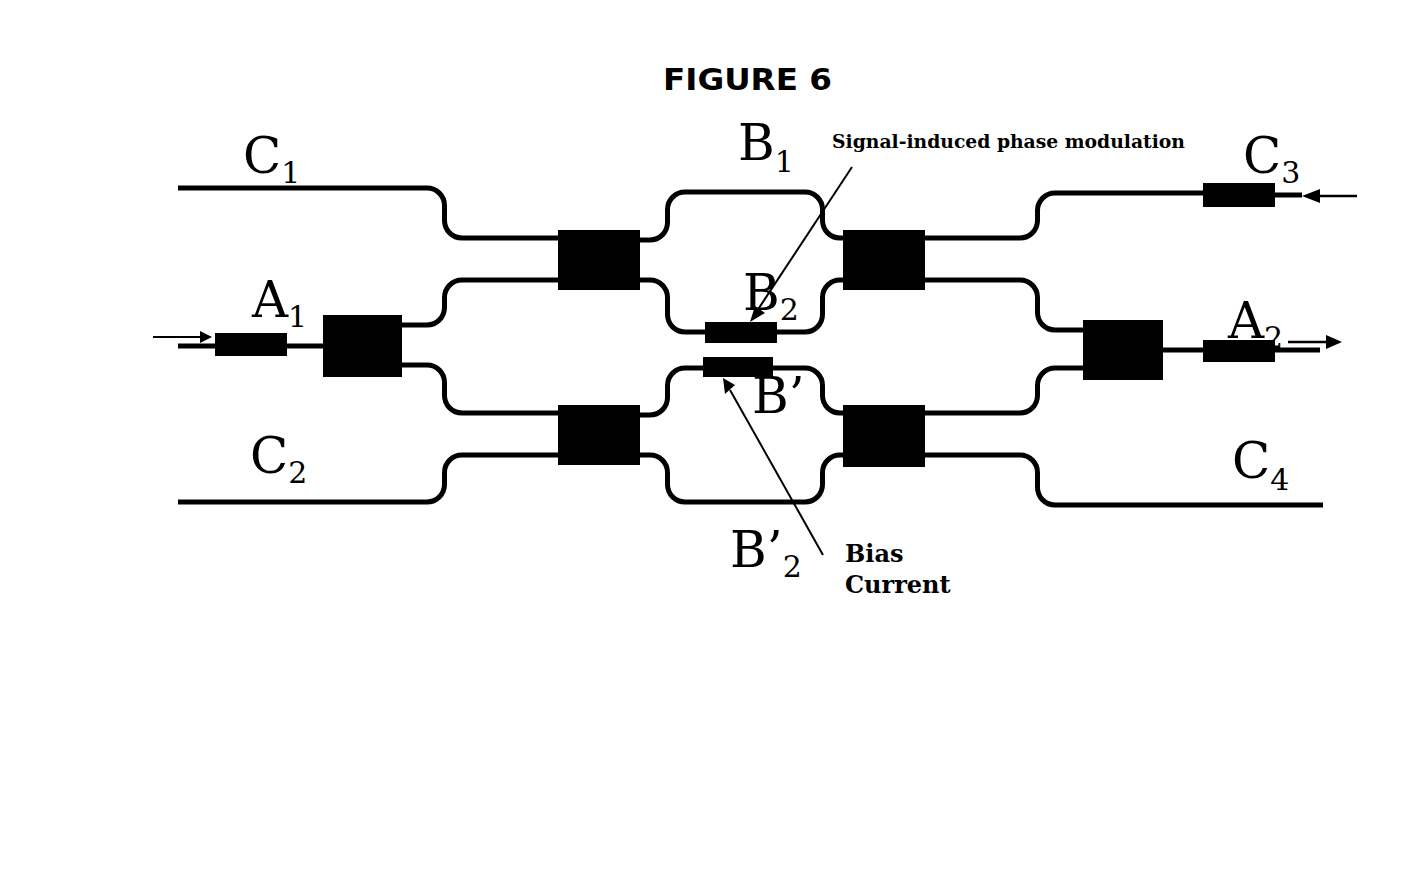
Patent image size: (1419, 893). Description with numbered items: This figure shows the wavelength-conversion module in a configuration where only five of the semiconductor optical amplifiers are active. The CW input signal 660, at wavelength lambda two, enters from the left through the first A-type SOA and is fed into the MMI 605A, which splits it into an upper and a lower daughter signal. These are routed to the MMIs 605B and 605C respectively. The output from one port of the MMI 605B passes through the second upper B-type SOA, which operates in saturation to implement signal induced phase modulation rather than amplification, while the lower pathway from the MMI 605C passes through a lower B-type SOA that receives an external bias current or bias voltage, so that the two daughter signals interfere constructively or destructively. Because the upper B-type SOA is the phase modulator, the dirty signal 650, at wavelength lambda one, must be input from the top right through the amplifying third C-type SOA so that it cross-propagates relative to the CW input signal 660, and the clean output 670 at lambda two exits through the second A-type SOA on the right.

The MMI 605A is at (380, 293).
The MMI 605B is at (592, 232).
The MMI 605C is at (577, 405).
The dirty signal 650 is at (1349, 250).
The CW input signal 660 is at (167, 379).
The clean signal output (lambda 2) 670 is at (1331, 370).